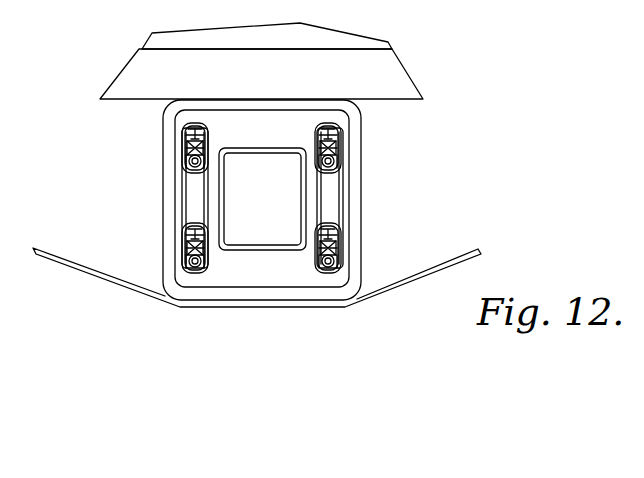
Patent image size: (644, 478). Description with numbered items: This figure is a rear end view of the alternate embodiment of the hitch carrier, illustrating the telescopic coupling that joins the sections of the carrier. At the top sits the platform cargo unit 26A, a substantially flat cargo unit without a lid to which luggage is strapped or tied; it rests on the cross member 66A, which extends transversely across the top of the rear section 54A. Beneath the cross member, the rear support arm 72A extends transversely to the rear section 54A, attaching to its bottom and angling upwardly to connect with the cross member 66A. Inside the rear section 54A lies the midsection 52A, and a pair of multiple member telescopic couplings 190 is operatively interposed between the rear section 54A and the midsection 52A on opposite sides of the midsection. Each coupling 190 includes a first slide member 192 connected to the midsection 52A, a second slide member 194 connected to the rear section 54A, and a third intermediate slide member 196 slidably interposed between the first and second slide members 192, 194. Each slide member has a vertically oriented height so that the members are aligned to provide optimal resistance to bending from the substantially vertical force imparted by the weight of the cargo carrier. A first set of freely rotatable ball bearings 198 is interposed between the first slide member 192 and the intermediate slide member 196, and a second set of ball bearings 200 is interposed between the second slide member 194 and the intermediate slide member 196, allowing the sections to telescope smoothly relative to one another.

The platform cargo unit 26A is at (328, 37).
The cross member 66A is at (402, 82).
The rear section 54A is at (357, 203).
The midsection 52A is at (233, 245).
The rear support arm 72A is at (82, 273).
The telescopic coupling 190 is at (266, 202).
The first slide member 192 is at (317, 192).
The second slide member 194 is at (181, 163).
The intermediate slide member 196 is at (185, 197).
The ball bearings 198 is at (207, 167).
The ball bearings 200 is at (313, 138).